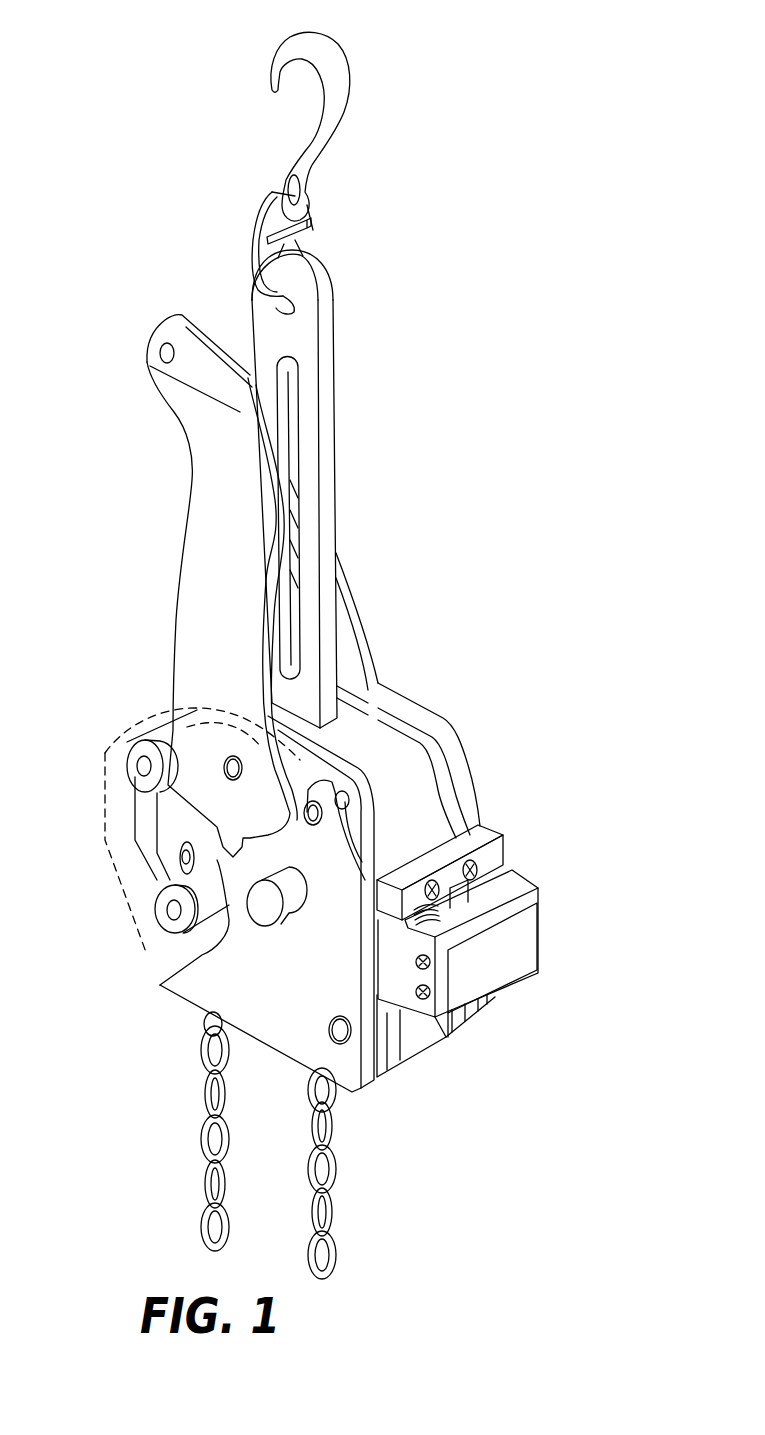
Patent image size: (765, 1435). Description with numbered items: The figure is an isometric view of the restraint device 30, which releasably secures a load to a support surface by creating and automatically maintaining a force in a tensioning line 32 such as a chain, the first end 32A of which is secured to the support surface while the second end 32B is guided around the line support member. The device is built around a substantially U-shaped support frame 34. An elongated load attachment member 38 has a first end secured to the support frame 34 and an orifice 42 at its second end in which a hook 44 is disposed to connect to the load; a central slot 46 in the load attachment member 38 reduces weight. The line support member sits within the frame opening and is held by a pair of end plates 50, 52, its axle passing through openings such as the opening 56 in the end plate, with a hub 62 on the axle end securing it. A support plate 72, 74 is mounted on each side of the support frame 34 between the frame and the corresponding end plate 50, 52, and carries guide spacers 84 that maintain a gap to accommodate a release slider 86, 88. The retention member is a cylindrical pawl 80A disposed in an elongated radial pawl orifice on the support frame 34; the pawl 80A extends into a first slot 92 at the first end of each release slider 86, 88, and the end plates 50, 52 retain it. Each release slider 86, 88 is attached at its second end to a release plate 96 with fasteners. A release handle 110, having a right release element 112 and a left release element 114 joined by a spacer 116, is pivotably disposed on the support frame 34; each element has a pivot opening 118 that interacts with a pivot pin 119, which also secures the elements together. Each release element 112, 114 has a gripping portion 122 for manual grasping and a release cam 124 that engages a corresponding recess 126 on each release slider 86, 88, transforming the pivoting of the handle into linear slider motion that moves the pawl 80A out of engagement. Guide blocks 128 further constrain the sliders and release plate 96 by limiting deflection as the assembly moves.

The restraint device 30 is at (520, 264).
The tensioning line 32 is at (281, 1155).
The first end of the tensioning chain 32A is at (200, 1218).
The second end of the tensioning chain 32B is at (338, 1276).
The support frame 34 is at (392, 737).
The load attachment member 38 is at (305, 345).
The orifice 42 is at (298, 303).
The hook 44 is at (340, 80).
The central slot 46 is at (300, 435).
The end plate 50 is at (455, 775).
The end plate 52 is at (338, 1052).
The opening in end plate 56 is at (288, 922).
The hub 62 is at (250, 917).
The support plate 72 is at (470, 820).
The support plate 74 is at (368, 826).
The cylindrical pawl 80A is at (188, 860).
The guide spacers 84 is at (128, 750).
The release slider 86 is at (508, 882).
The release slider 88 is at (440, 1000).
The first slot 92 is at (184, 853).
The release plate 96 is at (503, 952).
The release handle 110 is at (190, 472).
The right release element 112 is at (223, 338).
The left release element 114 is at (158, 370).
The spacer 116 is at (177, 320).
The pivot opening 118 is at (232, 758).
The pivot pin 119 is at (195, 760).
The gripping portion 122 is at (173, 417).
The release cam 124 is at (258, 853).
The recess 126 is at (152, 933).
The guide blocks 128 is at (490, 852).